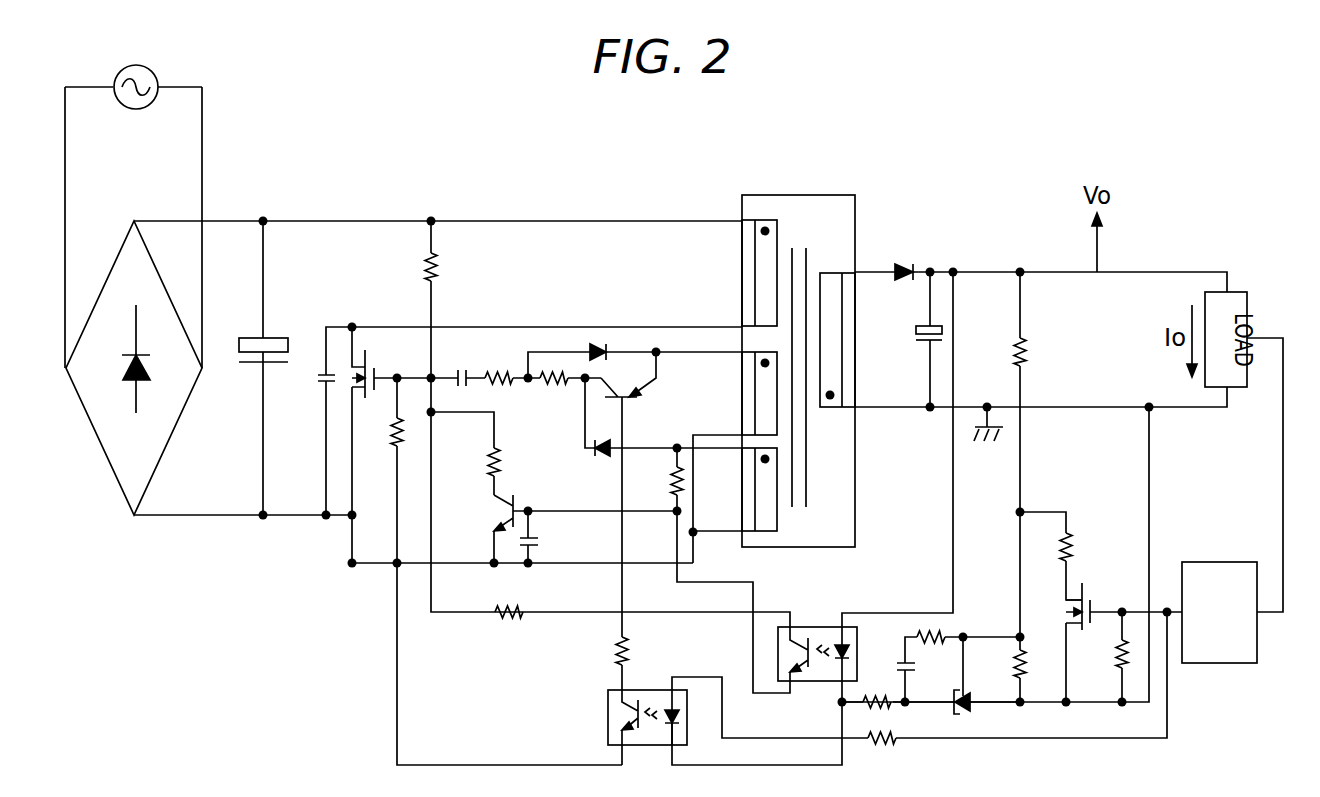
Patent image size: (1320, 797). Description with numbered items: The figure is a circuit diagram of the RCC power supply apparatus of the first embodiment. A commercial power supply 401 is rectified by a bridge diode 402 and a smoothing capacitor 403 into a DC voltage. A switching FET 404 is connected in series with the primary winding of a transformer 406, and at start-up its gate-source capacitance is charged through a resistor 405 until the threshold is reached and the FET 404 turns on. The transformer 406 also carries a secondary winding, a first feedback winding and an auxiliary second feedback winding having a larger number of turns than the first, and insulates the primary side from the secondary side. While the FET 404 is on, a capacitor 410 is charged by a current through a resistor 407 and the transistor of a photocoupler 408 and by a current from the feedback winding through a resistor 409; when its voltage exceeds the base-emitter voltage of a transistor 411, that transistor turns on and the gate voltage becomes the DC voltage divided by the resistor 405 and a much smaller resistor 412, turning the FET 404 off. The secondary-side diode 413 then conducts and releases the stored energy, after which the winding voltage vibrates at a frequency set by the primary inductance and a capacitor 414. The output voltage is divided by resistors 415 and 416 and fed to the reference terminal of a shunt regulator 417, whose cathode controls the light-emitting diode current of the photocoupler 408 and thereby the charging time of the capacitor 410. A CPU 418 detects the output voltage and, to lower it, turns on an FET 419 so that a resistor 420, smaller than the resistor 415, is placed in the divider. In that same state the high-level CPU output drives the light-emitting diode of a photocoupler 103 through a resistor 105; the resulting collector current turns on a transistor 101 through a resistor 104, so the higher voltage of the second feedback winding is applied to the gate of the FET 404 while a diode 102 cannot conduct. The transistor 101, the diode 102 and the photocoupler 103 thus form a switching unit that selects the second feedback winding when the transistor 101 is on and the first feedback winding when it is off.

The transistor 101 is at (635, 389).
The diode 102 is at (592, 465).
The photocoupler 103 is at (647, 714).
The resistor 104 is at (601, 652).
The resistor 105 is at (880, 753).
The commercial power supply 401 is at (136, 73).
The bridge diode 402 is at (130, 368).
The smoothing capacitor 403 is at (254, 368).
The switching FET 404 is at (391, 362).
The resistor 405 is at (408, 269).
The transformer 406 is at (791, 354).
The resistor 407 is at (504, 629).
The photocoupler 408 is at (817, 640).
The resistor 409 is at (655, 472).
The capacitor 410 is at (549, 537).
The transistor 411 is at (494, 529).
The resistor 412 is at (474, 462).
The secondary-side diode 413 is at (910, 257).
The capacitor 414 is at (317, 421).
The resistor 415 is at (1041, 353).
The resistor 416 is at (1039, 673).
The shunt regulator 417 is at (966, 680).
The CPU 418 is at (1219, 598).
The FET 419 is at (1095, 601).
The resistor 420 is at (1087, 547).